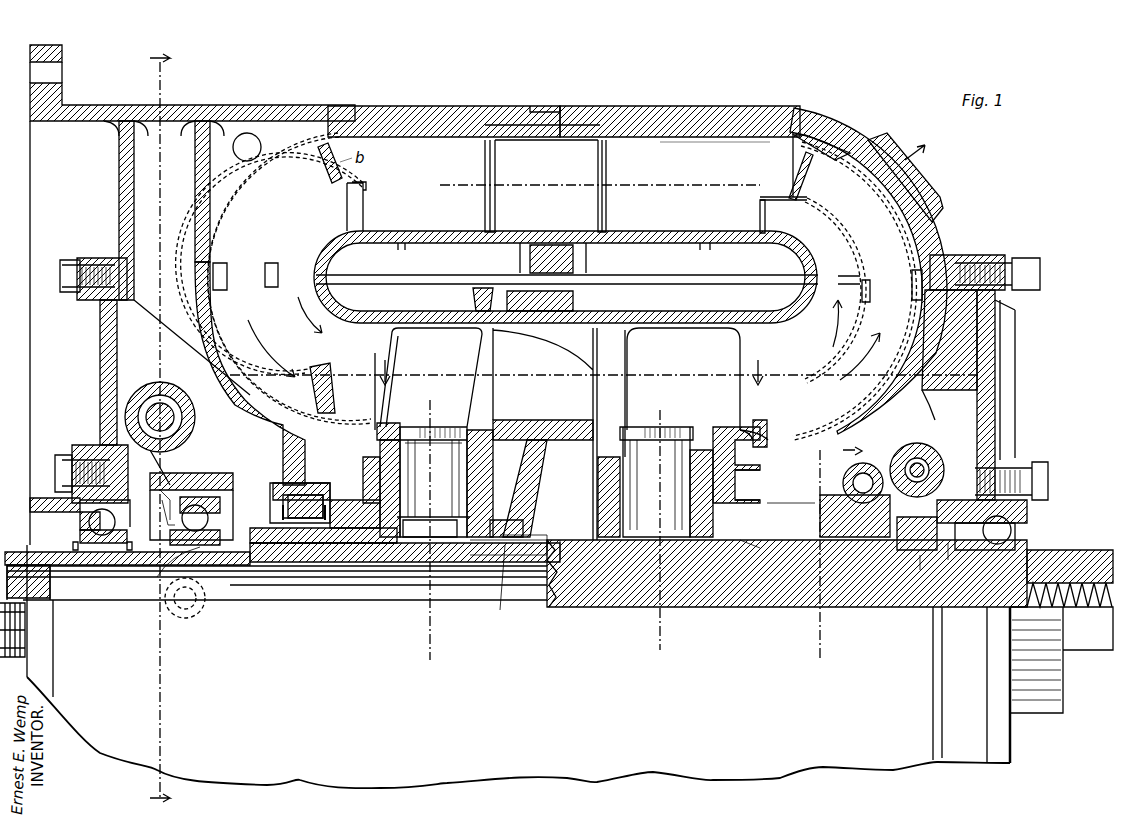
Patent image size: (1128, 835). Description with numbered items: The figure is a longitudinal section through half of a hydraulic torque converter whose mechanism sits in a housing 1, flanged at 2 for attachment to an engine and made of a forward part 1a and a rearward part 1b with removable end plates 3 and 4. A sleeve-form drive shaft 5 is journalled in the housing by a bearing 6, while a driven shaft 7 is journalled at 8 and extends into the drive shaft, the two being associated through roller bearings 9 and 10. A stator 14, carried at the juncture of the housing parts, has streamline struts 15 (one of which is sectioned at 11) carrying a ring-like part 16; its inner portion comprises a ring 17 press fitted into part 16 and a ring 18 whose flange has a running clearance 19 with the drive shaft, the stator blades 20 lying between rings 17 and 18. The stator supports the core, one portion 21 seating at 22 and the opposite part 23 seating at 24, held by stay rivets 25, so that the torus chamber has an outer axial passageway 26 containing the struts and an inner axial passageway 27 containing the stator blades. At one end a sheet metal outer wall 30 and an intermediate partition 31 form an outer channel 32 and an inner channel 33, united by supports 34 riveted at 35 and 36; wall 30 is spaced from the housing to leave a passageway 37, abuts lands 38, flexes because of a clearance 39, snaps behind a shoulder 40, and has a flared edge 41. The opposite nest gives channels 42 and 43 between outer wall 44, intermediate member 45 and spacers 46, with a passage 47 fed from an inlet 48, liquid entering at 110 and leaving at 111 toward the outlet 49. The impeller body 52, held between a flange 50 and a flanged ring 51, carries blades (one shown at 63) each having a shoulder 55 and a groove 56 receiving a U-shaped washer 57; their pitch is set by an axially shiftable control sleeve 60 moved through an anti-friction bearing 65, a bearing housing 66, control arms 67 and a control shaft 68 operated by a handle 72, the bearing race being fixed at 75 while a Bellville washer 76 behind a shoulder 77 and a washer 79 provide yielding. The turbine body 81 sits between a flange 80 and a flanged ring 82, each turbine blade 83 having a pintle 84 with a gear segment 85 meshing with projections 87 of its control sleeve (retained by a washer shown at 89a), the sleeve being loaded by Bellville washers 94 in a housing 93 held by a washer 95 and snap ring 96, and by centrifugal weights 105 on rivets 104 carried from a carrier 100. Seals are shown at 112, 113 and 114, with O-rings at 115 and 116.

The housing 1 is at (398, 115).
The forward part 1a is at (300, 106).
The rearward part 1b is at (710, 106).
The flange 2 is at (393, 208).
The end plate 3 is at (100, 345).
The end plate 4 is at (997, 378).
The drive shaft 5 is at (23, 611).
The bearing 6 is at (55, 500).
The driven shaft 7 is at (1090, 575).
The bearing 8 is at (1060, 485).
The roller bearing 9 is at (438, 659).
The roller bearing 10 is at (100, 585).
The vanes 11 is at (650, 187).
The stator 14 is at (549, 98).
The struts 15 is at (542, 160).
The ring-like part 16 is at (565, 268).
The ring-like part 17 is at (510, 300).
The ring-like portion 18 is at (548, 442).
The running clearance 19 is at (525, 522).
The stator blades 20 is at (543, 374).
The core 21 is at (565, 277).
The seat 22 is at (472, 300).
The core part 23 is at (710, 250).
The seat 24 is at (610, 278).
The stay rivets 25 is at (400, 275).
The outer axial passageway 26 is at (715, 168).
The inner axial passageway 27 is at (609, 434).
The outer wall 30 is at (930, 250).
The intermediate partition 31 is at (760, 190).
The outer channel 32 is at (871, 291).
The inner channel 33 is at (816, 267).
The supports 34 is at (850, 130).
The riveted projection 35 is at (880, 285).
The riveted projection 36 is at (940, 262).
The passageway 37 is at (960, 345).
The lands 38 is at (945, 322).
The clearance 39 is at (826, 140).
The shoulder 40 is at (790, 108).
The flared edge 41 is at (765, 425).
The outer channel 42 is at (234, 180).
The inner channel 43 is at (269, 283).
The outer wall 44 is at (278, 165).
The intermediate member 45 is at (372, 187).
The spacers 46 is at (340, 145).
The passage 47 is at (242, 400).
The inlet 48 is at (347, 187).
The outlet 49 is at (905, 155).
The flange 50 is at (487, 480).
The flanged ring element 51 is at (342, 490).
The impeller body 52 is at (493, 448).
The circumferential shoulder 55 is at (462, 428).
The groove 56 is at (395, 540).
The U-shaped washer 57 is at (420, 525).
The control sleeve 60 is at (262, 560).
The cavity 63 is at (605, 379).
The anti-friction bearing 65 is at (240, 560).
The bearing housing 66 is at (770, 545).
The control arms 67 is at (191, 492).
The control shaft 68 is at (150, 400).
The control handle 72 is at (150, 585).
The axial fixing 75 is at (292, 491).
The Bellville washer 76 is at (160, 513).
The shoulder 77 is at (160, 493).
The washer 79 is at (165, 495).
The flange 80 is at (600, 470).
The turbine body 81 is at (736, 465).
The flanged ring 82 is at (743, 485).
The turbine blade 83 is at (706, 379).
The pintle 84 is at (627, 545).
The gear segment 85 is at (700, 540).
The projections 87 is at (745, 560).
The ring 89a is at (597, 560).
The housing 93 is at (905, 520).
The Bellville spring washers 94 is at (955, 555).
The washer 95 is at (895, 605).
The snap ring 96 is at (900, 500).
The carrier 100 is at (845, 492).
The rivet 104 is at (925, 460).
The centrifugal weight 105 is at (930, 455).
The entry point 110 is at (362, 428).
The exit point 111 is at (767, 438).
The seal 112 is at (292, 555).
The seal 113 is at (785, 550).
The seal 114 is at (520, 560).
The O-ring seal 115 is at (335, 555).
The O-ring seal 116 is at (565, 610).